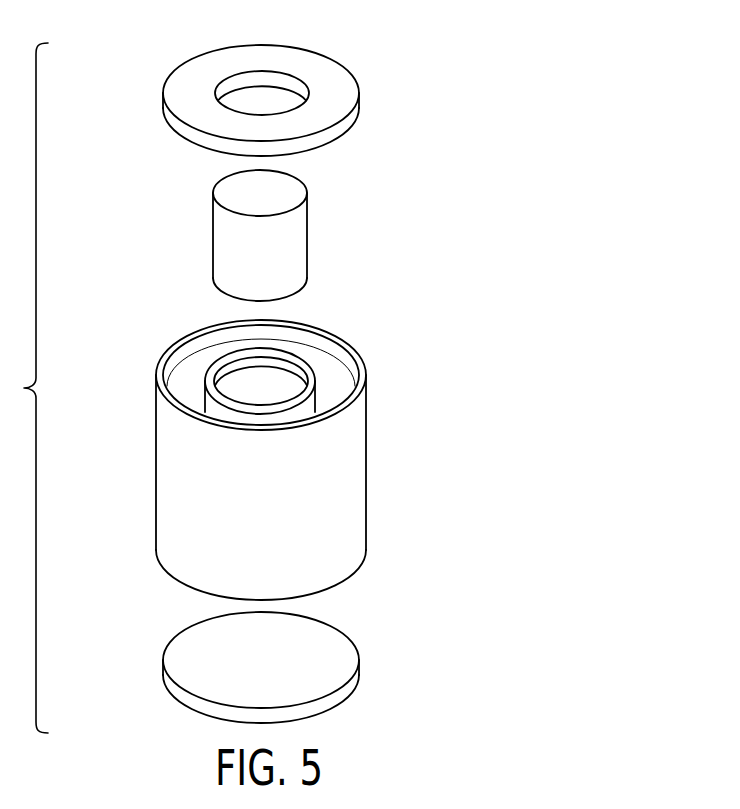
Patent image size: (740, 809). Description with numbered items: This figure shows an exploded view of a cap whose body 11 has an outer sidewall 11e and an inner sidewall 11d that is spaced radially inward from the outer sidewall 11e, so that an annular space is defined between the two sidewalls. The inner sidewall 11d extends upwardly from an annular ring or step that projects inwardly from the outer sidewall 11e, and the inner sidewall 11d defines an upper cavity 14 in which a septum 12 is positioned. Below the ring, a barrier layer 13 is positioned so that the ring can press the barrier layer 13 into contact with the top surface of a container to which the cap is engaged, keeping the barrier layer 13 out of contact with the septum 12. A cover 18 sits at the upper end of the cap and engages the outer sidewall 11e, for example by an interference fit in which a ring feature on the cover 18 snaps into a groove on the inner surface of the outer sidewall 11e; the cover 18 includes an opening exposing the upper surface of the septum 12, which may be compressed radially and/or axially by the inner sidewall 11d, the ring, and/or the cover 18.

The body 11 is at (270, 427).
The inner sidewall 11d is at (212, 372).
The outer sidewall 11e is at (165, 483).
The septum 12 is at (283, 246).
The barrier layer 13 is at (343, 657).
The upper cavity 14 is at (285, 368).
The cover 18 is at (343, 82).